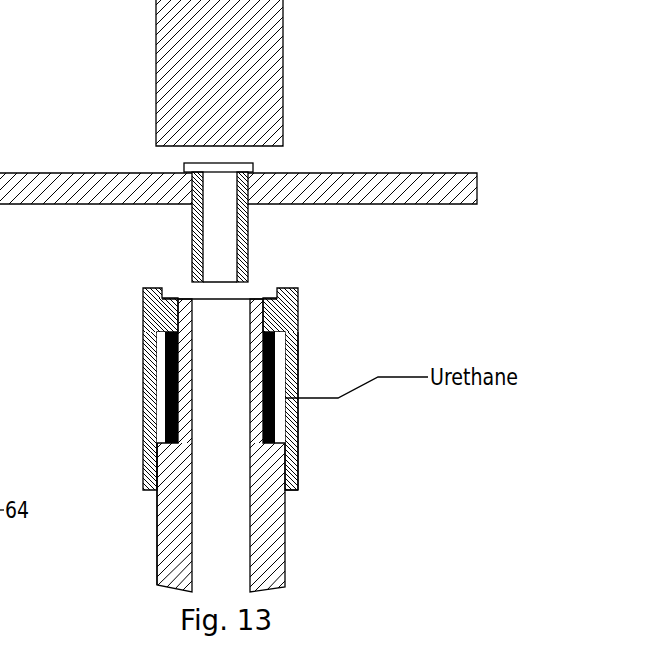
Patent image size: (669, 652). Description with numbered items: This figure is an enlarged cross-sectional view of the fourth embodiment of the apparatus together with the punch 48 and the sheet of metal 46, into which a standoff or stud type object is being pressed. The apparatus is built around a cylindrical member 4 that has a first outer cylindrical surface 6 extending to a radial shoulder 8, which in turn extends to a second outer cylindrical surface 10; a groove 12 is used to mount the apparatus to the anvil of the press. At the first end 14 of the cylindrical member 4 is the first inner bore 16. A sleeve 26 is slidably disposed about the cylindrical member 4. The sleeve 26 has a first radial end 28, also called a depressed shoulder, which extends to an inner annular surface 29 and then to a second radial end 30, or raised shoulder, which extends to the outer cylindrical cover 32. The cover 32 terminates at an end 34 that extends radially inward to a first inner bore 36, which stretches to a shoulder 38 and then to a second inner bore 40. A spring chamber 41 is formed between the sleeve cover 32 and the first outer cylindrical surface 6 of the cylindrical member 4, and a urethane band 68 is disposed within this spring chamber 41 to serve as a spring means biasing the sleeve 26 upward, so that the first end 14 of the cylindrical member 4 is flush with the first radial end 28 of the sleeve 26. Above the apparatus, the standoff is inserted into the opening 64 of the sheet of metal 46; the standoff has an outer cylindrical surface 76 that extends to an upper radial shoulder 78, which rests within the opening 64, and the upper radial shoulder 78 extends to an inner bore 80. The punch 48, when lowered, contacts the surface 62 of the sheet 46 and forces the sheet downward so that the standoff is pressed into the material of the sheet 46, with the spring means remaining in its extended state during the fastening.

The cylindrical member 4 is at (136, 445).
The first outer cylindrical surface 6 is at (167, 408).
The radial shoulder 8 is at (163, 448).
The second outer cylindrical surface 10 is at (157, 560).
The groove 12 is at (107, 285).
The first end 14 is at (187, 298).
The first inner bore 16 is at (195, 565).
The sleeve 26 is at (155, 332).
The first radial end 28 is at (347, 366).
The inner annular surface 29 is at (143, 296).
The second radial end 30 is at (290, 288).
The outer cylindrical cover 32 is at (298, 450).
The end 34 is at (290, 492).
The first inner bore 36 is at (288, 432).
The shoulder 38 is at (284, 327).
The second inner bore 40 is at (185, 310).
The spring chamber 41 is at (278, 375).
The sheet of metal 46 is at (0, 52).
The punch 48 is at (155, 50).
The surface 62 is at (405, 173).
The opening 64 is at (234, 105).
The urethane band 68 is at (167, 392).
The outer cylindrical surface 76 is at (232, 227).
The upper radial shoulder 78 is at (184, 167).
The inner bore 80 is at (222, 257).